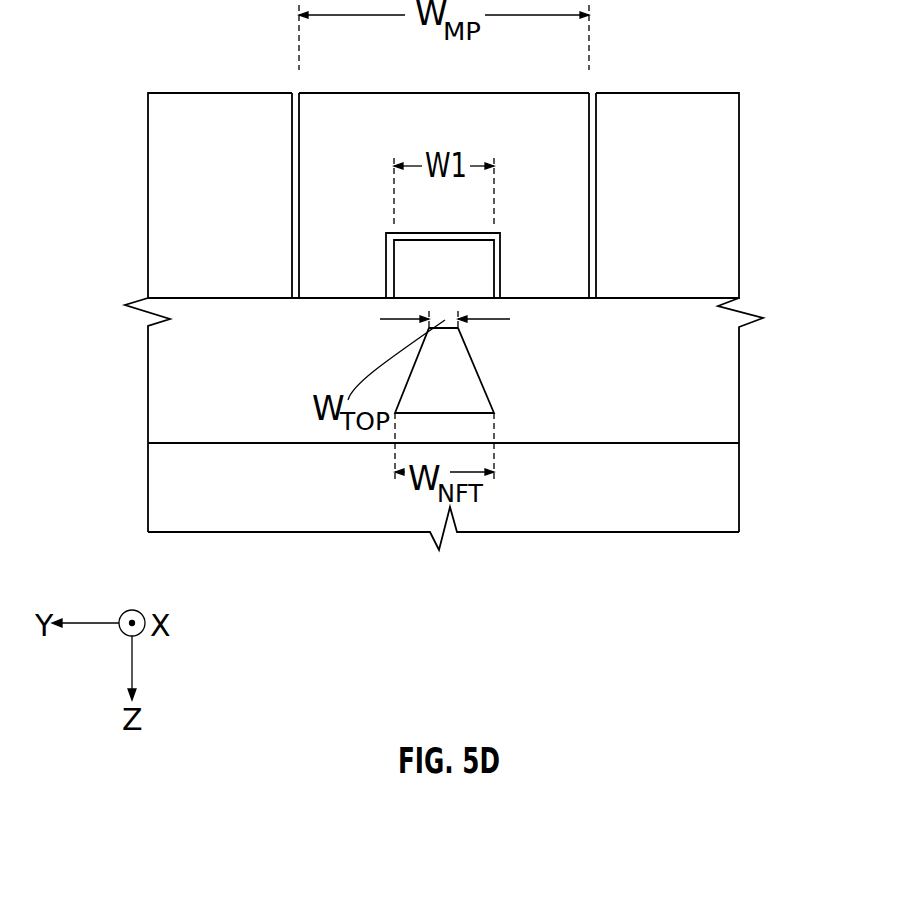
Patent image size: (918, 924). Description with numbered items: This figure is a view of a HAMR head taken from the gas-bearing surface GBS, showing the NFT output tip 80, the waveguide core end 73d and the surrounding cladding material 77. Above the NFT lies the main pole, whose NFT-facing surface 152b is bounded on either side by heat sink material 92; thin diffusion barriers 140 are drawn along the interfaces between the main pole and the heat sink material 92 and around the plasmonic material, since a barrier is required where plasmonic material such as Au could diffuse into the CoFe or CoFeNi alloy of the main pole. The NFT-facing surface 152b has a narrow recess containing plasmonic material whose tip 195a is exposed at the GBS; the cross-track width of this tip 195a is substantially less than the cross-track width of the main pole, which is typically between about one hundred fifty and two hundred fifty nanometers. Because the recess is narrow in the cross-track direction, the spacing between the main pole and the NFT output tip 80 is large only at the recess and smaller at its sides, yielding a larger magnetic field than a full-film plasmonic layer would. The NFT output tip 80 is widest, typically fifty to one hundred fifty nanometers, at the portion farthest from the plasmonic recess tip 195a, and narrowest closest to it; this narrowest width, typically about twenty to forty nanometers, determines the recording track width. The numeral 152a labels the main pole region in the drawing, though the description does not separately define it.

The heat sink material 92 is at (238, 126).
The diffusion barrier 140 is at (295, 93).
The main pole 152a is at (387, 113).
The plasmonic recess tip 195a is at (475, 253).
The NFT-facing surface of main pole 152b is at (315, 302).
The cladding material 77 is at (167, 393).
The waveguide core end 73d is at (270, 508).
The NFT output tip 80 is at (457, 377).
The gas-bearing surface GBS is at (705, 390).